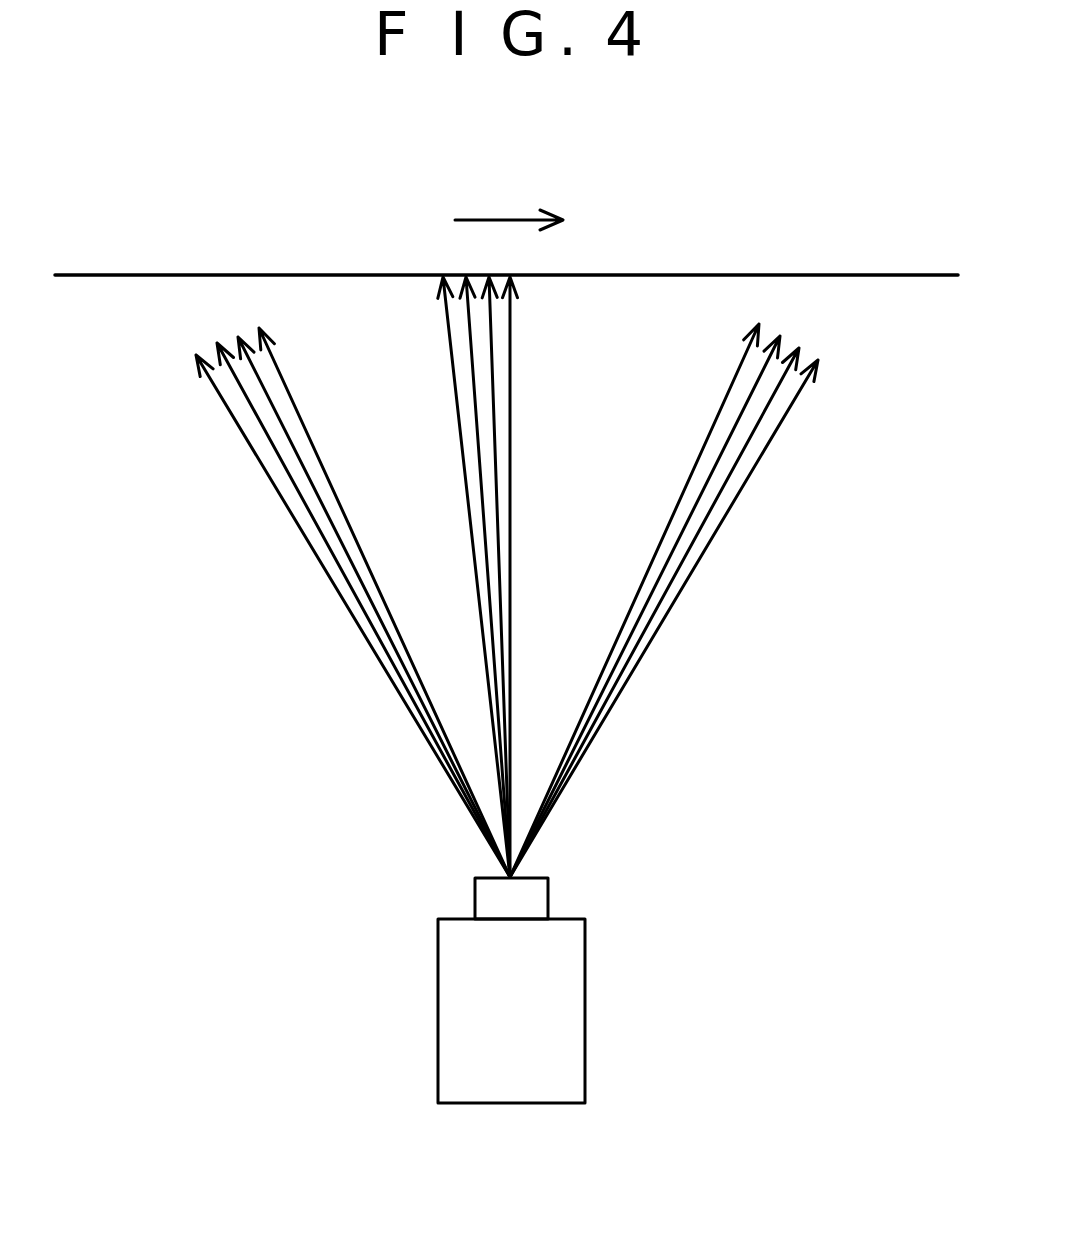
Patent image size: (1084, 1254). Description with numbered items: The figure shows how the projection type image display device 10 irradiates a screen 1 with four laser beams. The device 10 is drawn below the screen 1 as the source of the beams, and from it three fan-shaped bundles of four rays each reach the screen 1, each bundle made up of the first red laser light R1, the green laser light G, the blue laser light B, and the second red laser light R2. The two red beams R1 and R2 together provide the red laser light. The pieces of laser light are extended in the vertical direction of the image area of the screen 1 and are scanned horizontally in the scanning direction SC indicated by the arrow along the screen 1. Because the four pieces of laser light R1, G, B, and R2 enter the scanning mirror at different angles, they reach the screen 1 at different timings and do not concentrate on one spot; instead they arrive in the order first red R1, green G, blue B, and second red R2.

The screen 1 is at (158, 274).
The scanning direction SC is at (493, 218).
The first red laser light R1 is at (292, 398).
The green laser light G is at (308, 470).
The blue laser light B is at (273, 450).
The second red laser light R2 is at (317, 557).
The projection type image display device 10 is at (585, 990).